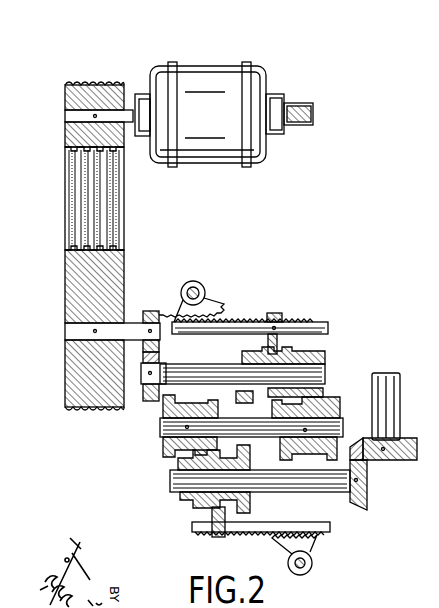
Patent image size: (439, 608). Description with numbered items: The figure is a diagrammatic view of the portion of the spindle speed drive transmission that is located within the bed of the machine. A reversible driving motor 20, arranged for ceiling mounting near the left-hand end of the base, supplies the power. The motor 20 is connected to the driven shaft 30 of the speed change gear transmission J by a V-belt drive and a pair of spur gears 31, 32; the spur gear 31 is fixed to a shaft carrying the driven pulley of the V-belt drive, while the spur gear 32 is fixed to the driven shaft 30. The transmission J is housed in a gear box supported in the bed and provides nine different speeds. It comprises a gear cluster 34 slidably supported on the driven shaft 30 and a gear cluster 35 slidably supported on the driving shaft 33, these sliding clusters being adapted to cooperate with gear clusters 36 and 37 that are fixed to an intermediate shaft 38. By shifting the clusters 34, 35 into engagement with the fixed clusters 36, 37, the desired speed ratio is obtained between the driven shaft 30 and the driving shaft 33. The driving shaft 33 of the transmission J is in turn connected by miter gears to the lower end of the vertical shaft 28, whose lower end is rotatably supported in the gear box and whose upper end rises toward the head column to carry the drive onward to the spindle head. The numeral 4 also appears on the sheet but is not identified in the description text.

The reversible driving motor 20 is at (233, 162).
The vertical shaft 28 is at (402, 432).
The driven shaft 30 is at (209, 366).
The spur gear 31 is at (158, 311).
The spur gear 32 is at (163, 416).
The driving shaft 33 is at (170, 480).
The gear cluster 34 is at (322, 361).
The gear cluster 35 is at (168, 508).
The gear cluster 36 is at (332, 395).
The gear cluster 37 is at (164, 453).
The intermediate shaft 38 is at (337, 432).
The frame 4 is at (432, 244).
The speed change gear transmission J is at (295, 314).